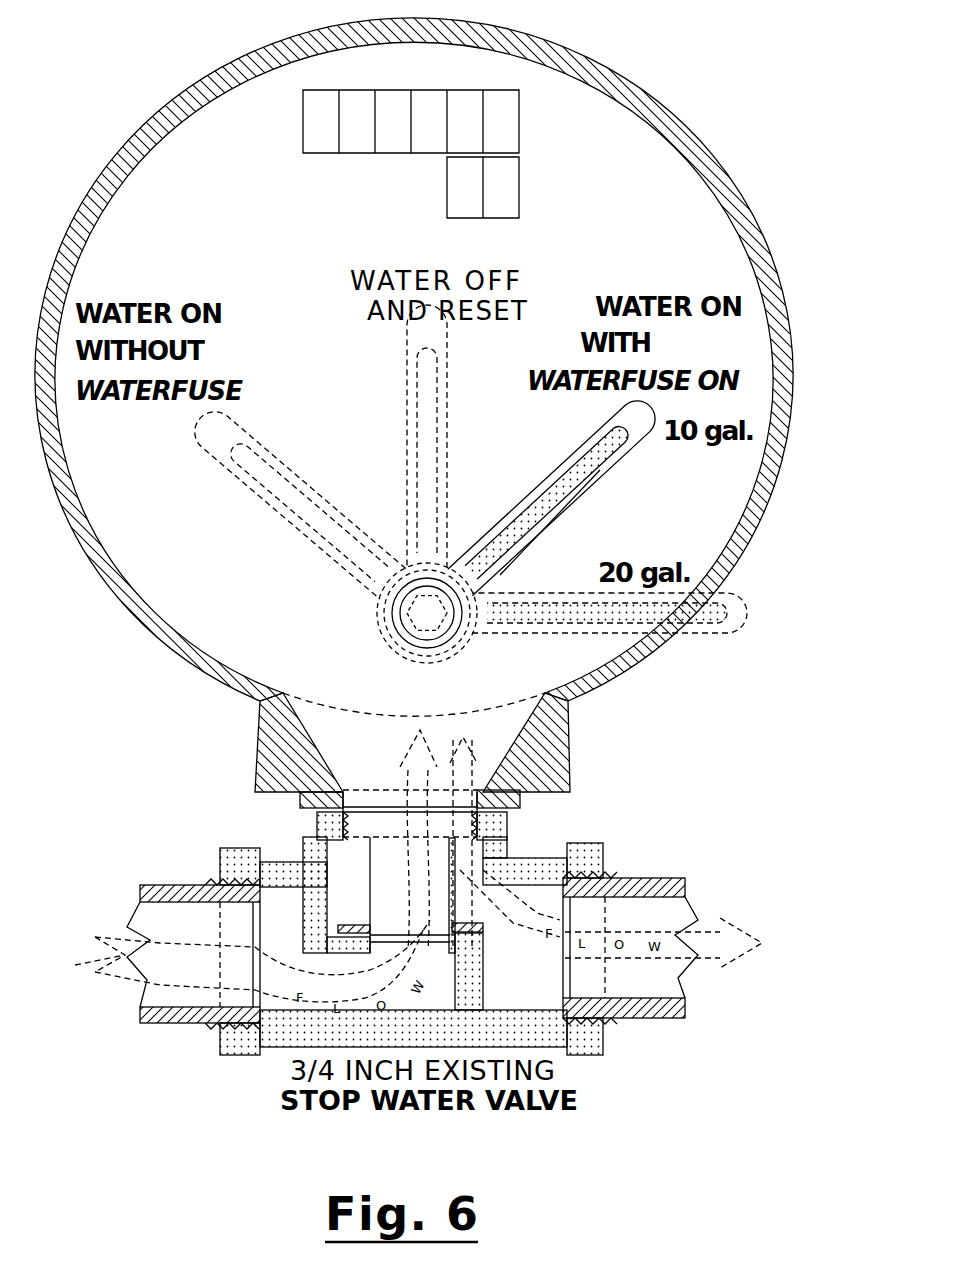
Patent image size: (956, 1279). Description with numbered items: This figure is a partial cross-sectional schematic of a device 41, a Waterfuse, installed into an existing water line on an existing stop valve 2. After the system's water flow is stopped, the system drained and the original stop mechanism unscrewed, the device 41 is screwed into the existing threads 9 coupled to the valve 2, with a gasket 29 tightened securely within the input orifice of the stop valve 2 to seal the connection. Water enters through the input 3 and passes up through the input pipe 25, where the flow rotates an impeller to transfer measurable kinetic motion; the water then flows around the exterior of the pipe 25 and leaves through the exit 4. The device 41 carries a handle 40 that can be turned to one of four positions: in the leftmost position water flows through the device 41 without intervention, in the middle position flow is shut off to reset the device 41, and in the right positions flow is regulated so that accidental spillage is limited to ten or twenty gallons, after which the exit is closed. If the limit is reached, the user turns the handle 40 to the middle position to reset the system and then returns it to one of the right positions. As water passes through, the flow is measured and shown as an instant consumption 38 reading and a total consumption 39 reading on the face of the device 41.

The stop valve 2 is at (310, 1032).
The input 3 is at (232, 937).
The exit 4 is at (623, 955).
The existing threads 9 is at (320, 814).
The input pipe 25 is at (455, 900).
The gasket 29 is at (570, 897).
The instant consumption 38 is at (520, 173).
The total consumption 39 is at (513, 90).
The handle 40 is at (637, 428).
The device 41 is at (207, 80).